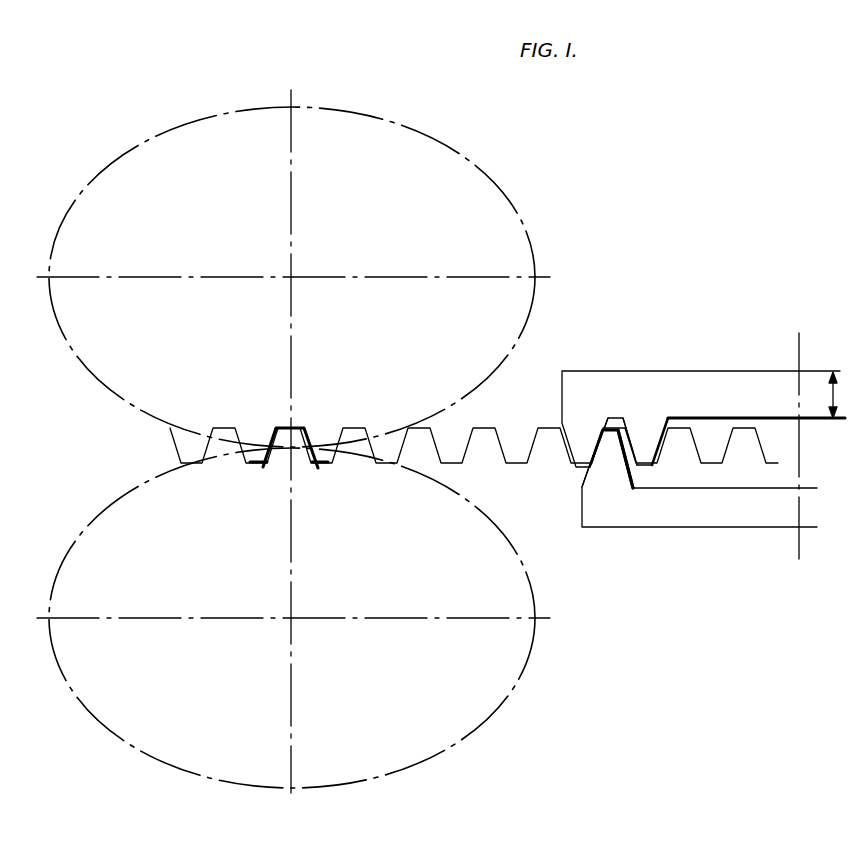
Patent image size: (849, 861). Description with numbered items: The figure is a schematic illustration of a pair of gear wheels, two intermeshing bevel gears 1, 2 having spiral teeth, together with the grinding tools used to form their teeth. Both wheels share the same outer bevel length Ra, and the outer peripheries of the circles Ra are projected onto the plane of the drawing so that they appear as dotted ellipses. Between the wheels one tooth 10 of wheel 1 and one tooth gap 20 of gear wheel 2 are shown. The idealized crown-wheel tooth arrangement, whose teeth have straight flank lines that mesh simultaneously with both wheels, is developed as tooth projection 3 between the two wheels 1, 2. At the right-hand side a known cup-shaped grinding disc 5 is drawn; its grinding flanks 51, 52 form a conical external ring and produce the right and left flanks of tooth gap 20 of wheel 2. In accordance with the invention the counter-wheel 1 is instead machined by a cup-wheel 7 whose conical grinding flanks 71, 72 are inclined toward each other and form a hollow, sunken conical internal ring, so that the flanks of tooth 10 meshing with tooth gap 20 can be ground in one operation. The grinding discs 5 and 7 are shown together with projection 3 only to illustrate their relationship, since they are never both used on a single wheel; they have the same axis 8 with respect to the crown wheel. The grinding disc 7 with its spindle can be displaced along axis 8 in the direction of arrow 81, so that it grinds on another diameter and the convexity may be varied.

The bevel gear 1 is at (134, 733).
The bevel gear 2 is at (467, 153).
The tooth projection 3 is at (535, 452).
The cup-shaped grinding disc 5 is at (713, 515).
The cup-wheel 7 is at (722, 383).
The axis 8 is at (800, 353).
The tooth 10 is at (288, 470).
The tooth gap 20 is at (285, 424).
The grinding flank 51 is at (594, 447).
The grinding flank 52 is at (628, 472).
The conical grinding flank 71 is at (596, 432).
The conical grinding flank 72 is at (633, 430).
The arrow 81 is at (832, 398).
The outer bevel length Ra is at (150, 137).